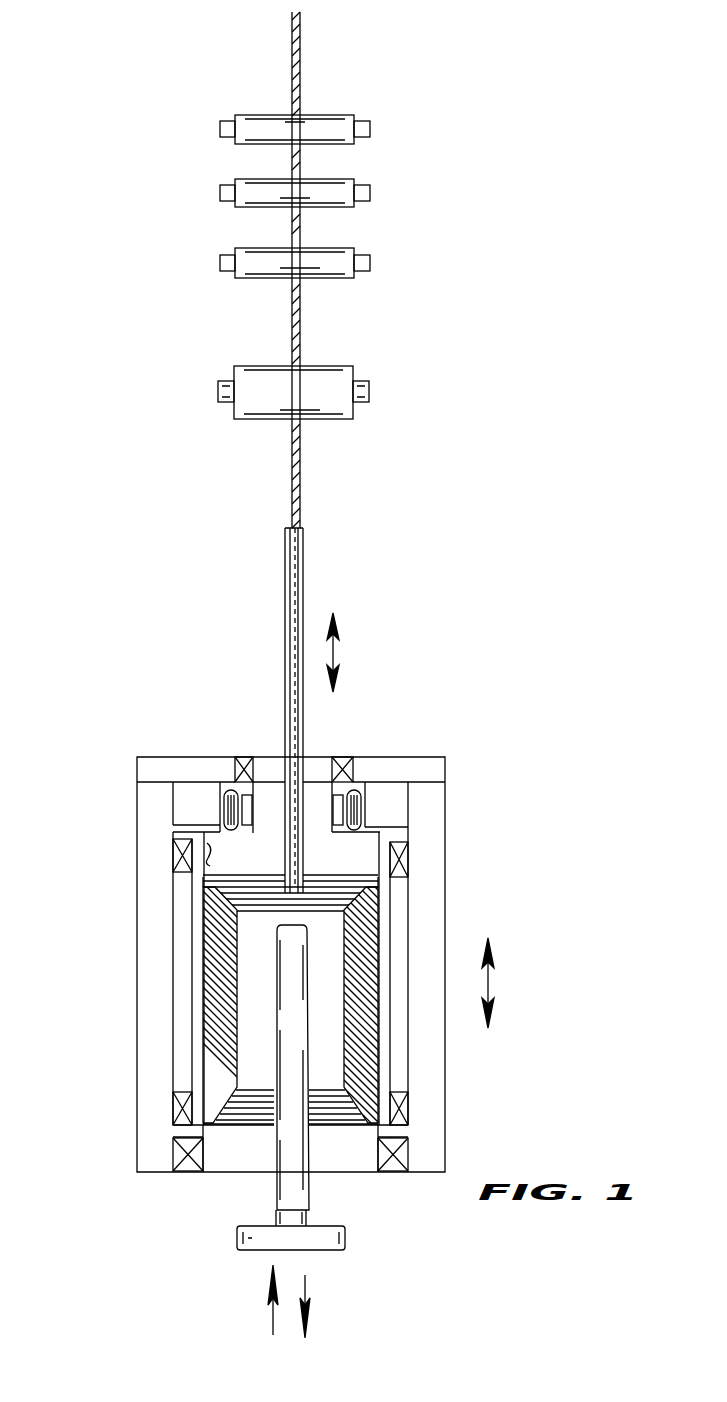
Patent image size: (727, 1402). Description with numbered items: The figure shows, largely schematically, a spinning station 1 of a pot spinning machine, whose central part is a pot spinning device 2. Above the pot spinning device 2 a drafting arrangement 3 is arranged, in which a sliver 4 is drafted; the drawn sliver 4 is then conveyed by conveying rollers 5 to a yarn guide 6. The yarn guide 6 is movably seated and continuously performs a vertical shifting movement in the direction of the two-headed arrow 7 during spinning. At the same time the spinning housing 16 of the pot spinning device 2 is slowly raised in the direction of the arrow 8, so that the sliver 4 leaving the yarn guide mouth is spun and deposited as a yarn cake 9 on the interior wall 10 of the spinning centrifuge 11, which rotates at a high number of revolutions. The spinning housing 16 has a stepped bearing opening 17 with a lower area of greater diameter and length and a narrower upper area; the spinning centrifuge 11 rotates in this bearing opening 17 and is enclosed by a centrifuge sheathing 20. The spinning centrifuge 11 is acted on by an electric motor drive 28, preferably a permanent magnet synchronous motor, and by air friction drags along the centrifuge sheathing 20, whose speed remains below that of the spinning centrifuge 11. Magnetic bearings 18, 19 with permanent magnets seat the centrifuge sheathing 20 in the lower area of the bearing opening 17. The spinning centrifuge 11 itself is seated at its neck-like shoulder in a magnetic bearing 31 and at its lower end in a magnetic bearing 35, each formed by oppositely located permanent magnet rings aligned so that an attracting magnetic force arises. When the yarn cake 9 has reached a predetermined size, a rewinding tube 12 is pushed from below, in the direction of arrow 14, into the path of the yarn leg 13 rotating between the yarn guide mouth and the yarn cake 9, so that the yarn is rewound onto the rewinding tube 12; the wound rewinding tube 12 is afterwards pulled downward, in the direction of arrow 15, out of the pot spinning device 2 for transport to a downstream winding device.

The spinning station 1 is at (468, 408).
The pot spinning device 2 is at (70, 836).
The drafting arrangement 3 is at (375, 108).
The sliver 4 is at (298, 500).
The conveying rollers 5 is at (345, 376).
The yarn guide 6 is at (304, 563).
The two-headed arrow 7 is at (335, 655).
The arrow 8 is at (490, 985).
The yarn cake 9 is at (365, 1046).
The interior wall 10 is at (206, 833).
The spinning centrifuge 11 is at (380, 928).
The rewinding tube 12 is at (276, 1190).
The yarn leg 13 is at (322, 880).
The arrow 14 is at (271, 1313).
The arrow 15 is at (307, 1296).
The spinning housing 16 is at (147, 922).
The stepped bearing opening 17 is at (347, 1152).
The magnetic bearing 18 is at (158, 867).
The magnetic bearing 19 is at (155, 1100).
The centrifuge sheathing 20 is at (190, 977).
The electric motor drive 28 is at (372, 784).
The magnetic bearing 31 is at (236, 745).
The magnetic bearing 35 is at (184, 1192).